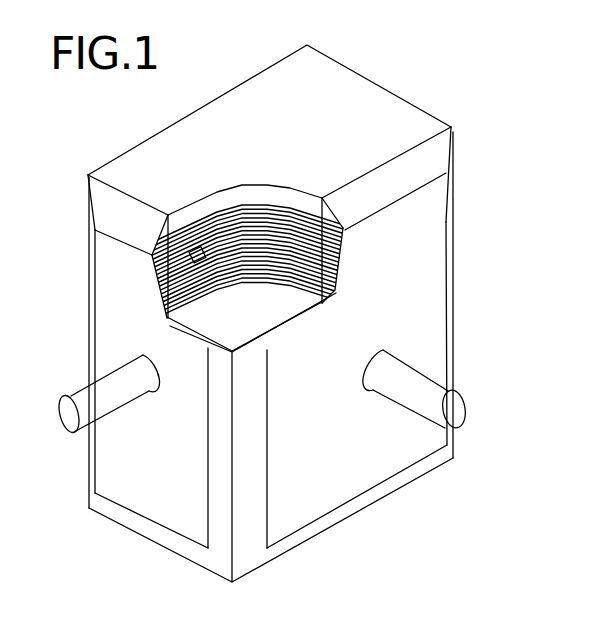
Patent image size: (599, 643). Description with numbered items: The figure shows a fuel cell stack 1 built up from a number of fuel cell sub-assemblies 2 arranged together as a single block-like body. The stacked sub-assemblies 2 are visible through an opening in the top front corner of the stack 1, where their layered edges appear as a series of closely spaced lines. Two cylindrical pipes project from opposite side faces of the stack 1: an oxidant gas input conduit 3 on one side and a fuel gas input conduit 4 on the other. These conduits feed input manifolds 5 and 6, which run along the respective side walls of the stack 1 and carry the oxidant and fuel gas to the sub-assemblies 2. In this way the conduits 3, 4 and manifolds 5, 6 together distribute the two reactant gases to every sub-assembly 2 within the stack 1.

The fuel cell stack 1 is at (448, 102).
The fuel cell sub-assemblies 2 is at (202, 255).
The oxidant gas input conduit 3 is at (425, 386).
The fuel gas input conduit 4 is at (88, 393).
The oxidant input manifold 5 is at (440, 249).
The fuel gas input manifold 6 is at (103, 282).